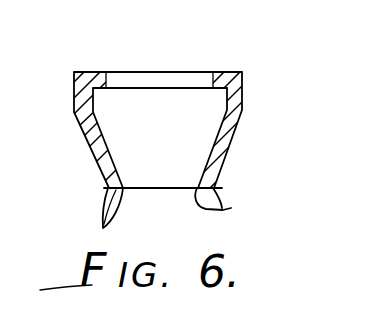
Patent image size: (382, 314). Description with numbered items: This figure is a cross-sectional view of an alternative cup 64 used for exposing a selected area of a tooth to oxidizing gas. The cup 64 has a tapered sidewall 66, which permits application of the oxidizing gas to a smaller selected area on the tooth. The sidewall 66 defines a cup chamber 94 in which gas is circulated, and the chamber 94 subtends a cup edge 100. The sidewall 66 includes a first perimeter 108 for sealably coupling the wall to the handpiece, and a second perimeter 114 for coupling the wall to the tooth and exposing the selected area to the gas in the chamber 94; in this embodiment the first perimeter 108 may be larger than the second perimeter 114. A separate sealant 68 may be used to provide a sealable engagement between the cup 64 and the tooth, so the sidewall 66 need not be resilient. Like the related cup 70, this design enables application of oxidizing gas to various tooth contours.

The cup 64 is at (265, 82).
The tapered sidewall 66 is at (228, 151).
The sealant 68 is at (230, 210).
The cup 70 is at (93, 215).
The cup chamber 94 is at (176, 139).
The cup edge 100 is at (178, 188).
The first perimeter 108 is at (221, 72).
The second perimeter 114 is at (104, 197).